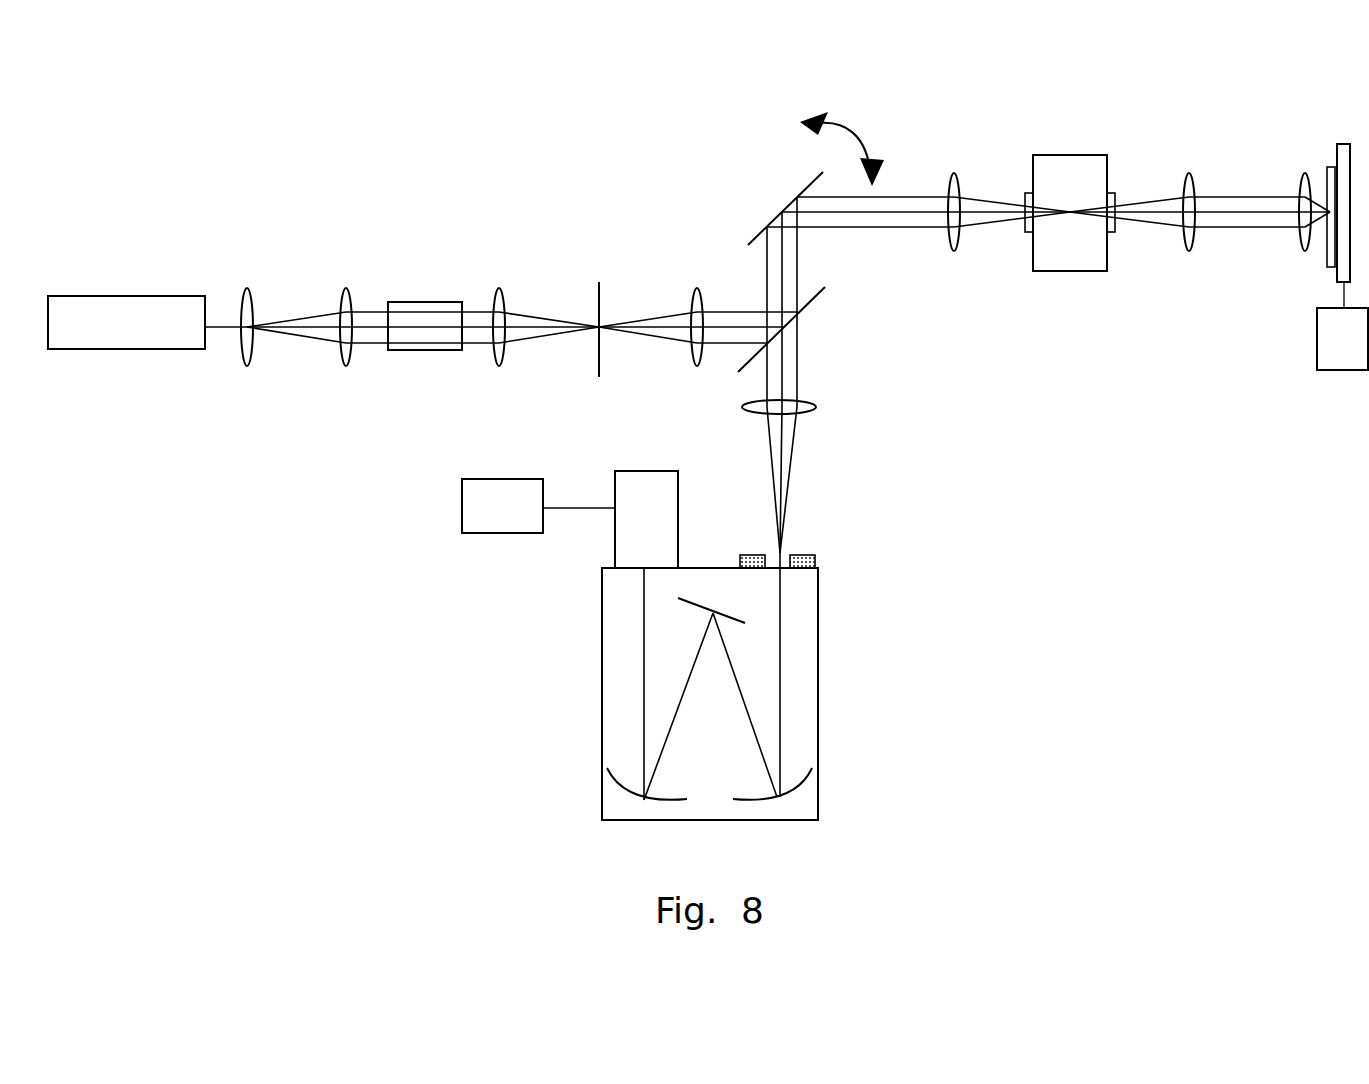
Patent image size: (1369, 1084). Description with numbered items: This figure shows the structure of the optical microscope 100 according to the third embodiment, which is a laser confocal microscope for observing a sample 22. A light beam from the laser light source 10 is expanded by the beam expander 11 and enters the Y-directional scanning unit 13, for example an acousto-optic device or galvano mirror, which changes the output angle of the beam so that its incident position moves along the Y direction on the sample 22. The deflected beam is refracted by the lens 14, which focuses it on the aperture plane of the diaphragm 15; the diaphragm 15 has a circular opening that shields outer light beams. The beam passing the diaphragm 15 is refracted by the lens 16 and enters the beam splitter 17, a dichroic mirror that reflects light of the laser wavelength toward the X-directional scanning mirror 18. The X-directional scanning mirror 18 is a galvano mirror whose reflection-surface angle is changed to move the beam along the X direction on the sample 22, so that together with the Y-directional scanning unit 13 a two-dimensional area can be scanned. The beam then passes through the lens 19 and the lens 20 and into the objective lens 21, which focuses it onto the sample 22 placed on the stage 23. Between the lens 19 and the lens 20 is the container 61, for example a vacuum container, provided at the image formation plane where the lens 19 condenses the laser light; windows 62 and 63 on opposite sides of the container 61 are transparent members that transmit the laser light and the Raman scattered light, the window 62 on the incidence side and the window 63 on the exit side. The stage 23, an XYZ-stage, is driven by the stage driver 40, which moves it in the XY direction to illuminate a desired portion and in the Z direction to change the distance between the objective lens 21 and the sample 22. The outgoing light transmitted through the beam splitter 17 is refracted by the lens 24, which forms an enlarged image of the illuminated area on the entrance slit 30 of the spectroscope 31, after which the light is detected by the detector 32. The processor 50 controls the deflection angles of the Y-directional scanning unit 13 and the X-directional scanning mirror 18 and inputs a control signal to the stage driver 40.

The laser light source 10 is at (166, 296).
The beam expander 11 is at (350, 277).
The Y-directional scanning unit 13 is at (454, 302).
The lens 14 is at (499, 366).
The diaphragm 15 is at (599, 377).
The lens 16 is at (696, 366).
The beam splitter 17 is at (815, 297).
The X-directional scanning mirror 18 is at (757, 232).
The lens 19 is at (953, 172).
The lens 20 is at (1188, 172).
The objective lens 21 is at (1303, 172).
The sample 22 is at (1328, 268).
The stage 23 is at (1343, 144).
The lens 24 is at (817, 405).
The entrance slit 30 is at (816, 560).
The spectroscope 31 is at (820, 595).
The detector 32 is at (678, 500).
The stage driver 40 is at (1348, 372).
The processor 50 is at (522, 535).
The container 61 is at (1073, 155).
The window 62 is at (1026, 193).
The window 63 is at (1114, 193).
The optical microscope 100 is at (708, 448).